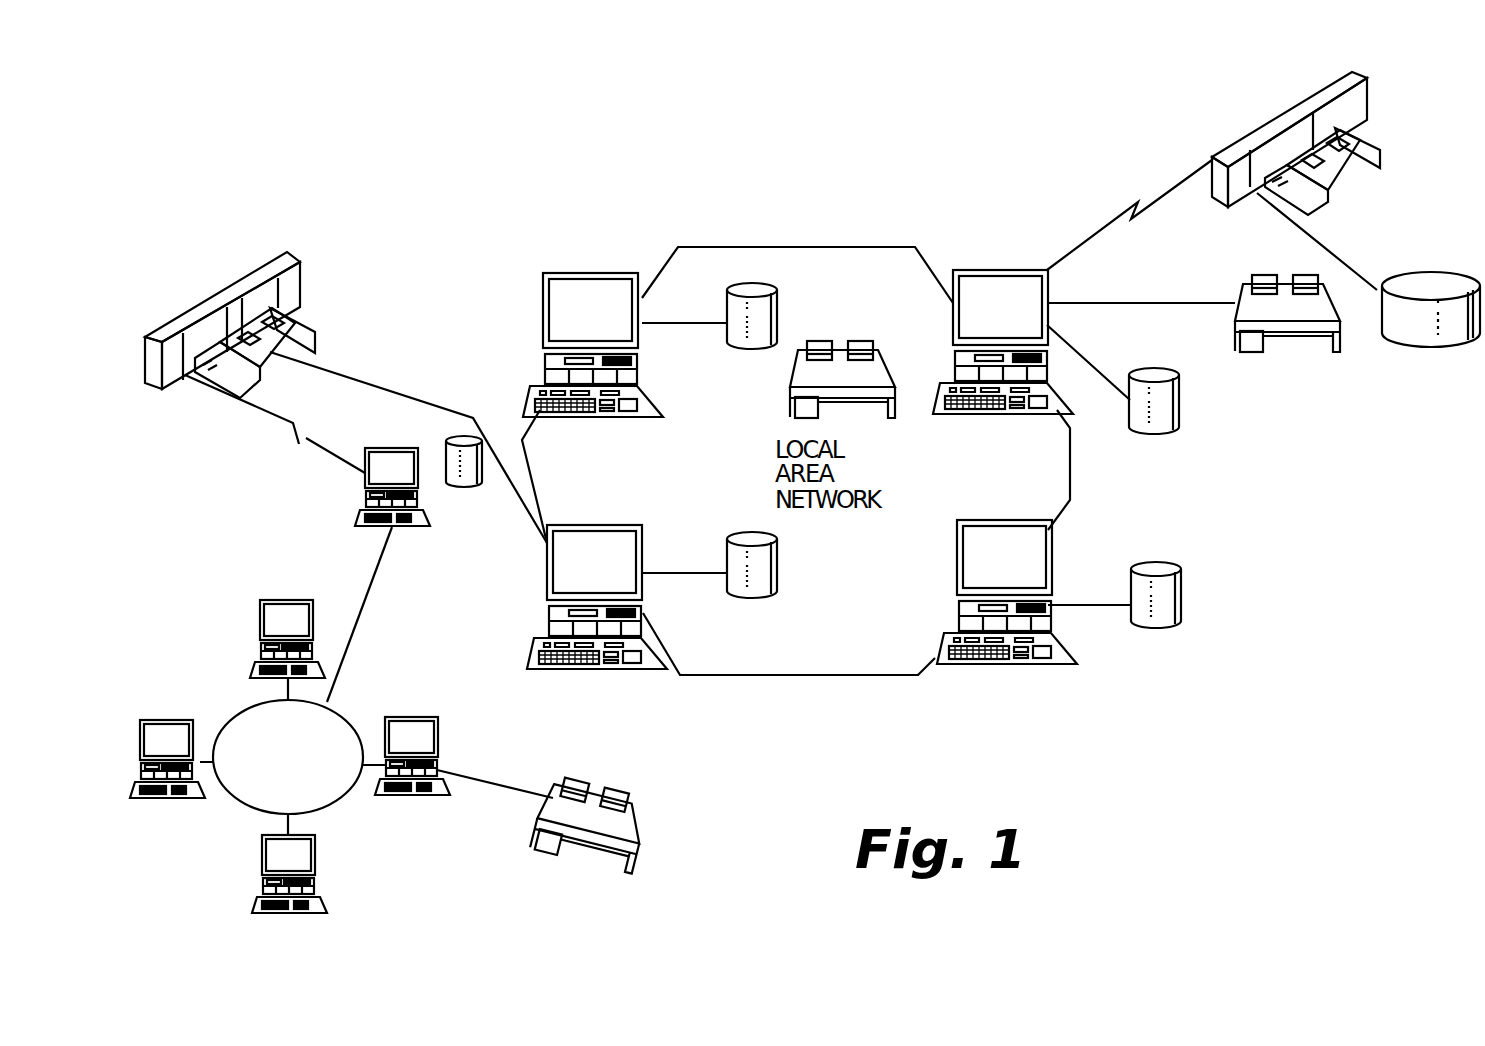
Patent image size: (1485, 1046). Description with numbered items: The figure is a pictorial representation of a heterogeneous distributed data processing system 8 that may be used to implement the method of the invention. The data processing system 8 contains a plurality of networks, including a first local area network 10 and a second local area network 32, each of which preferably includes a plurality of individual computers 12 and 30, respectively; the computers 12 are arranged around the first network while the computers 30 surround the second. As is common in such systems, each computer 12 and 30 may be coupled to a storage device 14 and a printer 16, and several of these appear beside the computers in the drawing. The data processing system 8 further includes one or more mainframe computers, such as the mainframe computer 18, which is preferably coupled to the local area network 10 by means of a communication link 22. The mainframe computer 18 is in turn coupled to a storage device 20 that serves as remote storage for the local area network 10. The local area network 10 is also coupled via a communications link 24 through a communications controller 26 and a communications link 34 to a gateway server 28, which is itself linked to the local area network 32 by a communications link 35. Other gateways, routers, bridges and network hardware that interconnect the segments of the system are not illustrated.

The data processing system 8 is at (828, 202).
The local area network 10 is at (827, 677).
The computer 12 is at (612, 273).
The storage device 14 is at (776, 304).
The printer 16 is at (840, 340).
The mainframe computer 18 is at (1290, 112).
The storage device 20 is at (1448, 280).
The communication link 22 is at (1168, 193).
The communications link 24 is at (400, 392).
The communications controller 26 is at (293, 262).
The gateway server 28 is at (393, 447).
The computer 30 is at (297, 600).
The local area network 32 is at (240, 803).
The communications link 34 is at (310, 453).
The communications link 35 is at (358, 630).